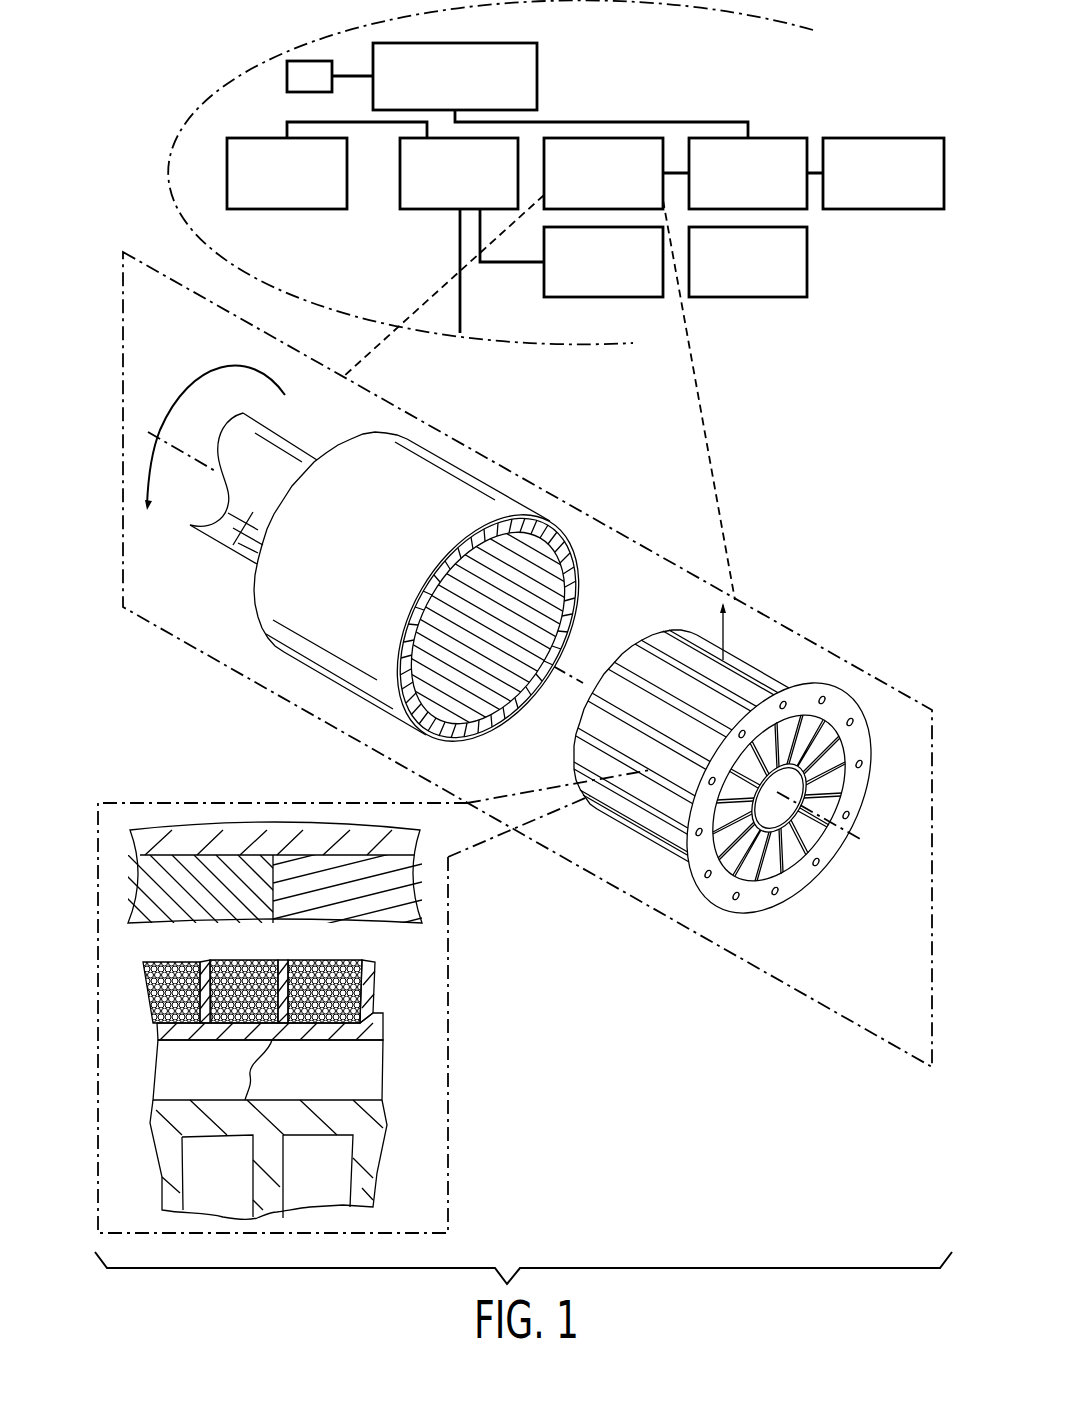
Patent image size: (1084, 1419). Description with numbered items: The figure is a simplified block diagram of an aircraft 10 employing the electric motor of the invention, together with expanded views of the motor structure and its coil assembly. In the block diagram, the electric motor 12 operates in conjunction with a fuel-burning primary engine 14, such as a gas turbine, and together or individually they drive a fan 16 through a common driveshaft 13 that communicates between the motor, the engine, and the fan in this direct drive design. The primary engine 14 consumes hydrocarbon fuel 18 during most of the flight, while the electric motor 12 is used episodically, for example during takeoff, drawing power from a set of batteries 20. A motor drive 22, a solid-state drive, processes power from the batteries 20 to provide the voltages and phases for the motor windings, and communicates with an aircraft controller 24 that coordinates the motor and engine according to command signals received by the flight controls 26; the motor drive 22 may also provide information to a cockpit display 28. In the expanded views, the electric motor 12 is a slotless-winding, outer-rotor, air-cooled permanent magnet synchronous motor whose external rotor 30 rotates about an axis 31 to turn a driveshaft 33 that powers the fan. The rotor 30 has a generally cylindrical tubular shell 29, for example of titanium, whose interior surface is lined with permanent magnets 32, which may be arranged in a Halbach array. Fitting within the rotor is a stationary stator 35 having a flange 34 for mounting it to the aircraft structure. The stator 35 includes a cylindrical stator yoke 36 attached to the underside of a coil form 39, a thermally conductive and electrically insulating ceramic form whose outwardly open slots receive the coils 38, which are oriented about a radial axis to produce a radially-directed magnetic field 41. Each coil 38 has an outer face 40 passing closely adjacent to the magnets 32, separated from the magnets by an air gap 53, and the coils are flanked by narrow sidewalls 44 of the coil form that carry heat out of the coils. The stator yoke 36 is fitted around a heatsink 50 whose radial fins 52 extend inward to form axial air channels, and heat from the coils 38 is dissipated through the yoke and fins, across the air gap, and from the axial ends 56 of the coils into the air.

The aircraft 10 is at (220, 38).
The electric motor 12 is at (622, 138).
The common driveshaft 13 is at (676, 170).
The primary engine 14 is at (762, 138).
The fan 16 is at (875, 138).
The fuel 18 is at (807, 258).
The batteries 20 is at (592, 297).
The motor drive 22 is at (432, 209).
The aircraft controller 24 is at (537, 67).
The flight controls 26 is at (287, 77).
The cockpit display 28 is at (308, 209).
The tubular shell 29 is at (410, 725).
The rotor 30 is at (330, 652).
The axis 31 is at (188, 450).
The permanent magnets 32 is at (553, 538).
The driveshaft 33 is at (240, 540).
The flange 34 is at (758, 895).
The stator 35 is at (657, 868).
The stator yoke 36 is at (560, 772).
The coils 38 is at (745, 697).
The coil form 39 is at (135, 983).
The outer face 40 is at (353, 953).
The radially-directed magnetic field 41 is at (725, 637).
The sidewalls 44 is at (380, 992).
The heatsink 50 is at (862, 822).
The radial fins 52 is at (828, 778).
The central cylindrical tube 53 is at (777, 813).
The axial ends 56 is at (625, 618).